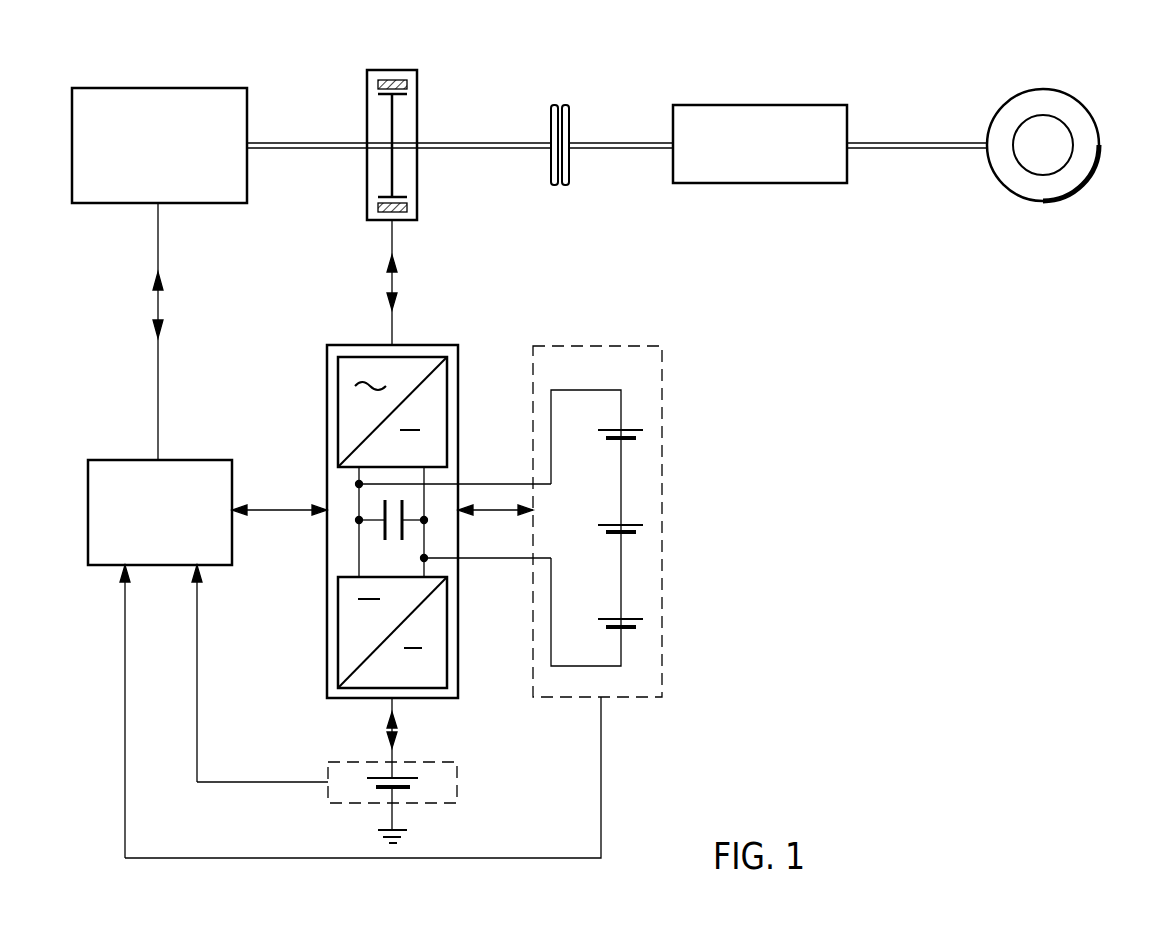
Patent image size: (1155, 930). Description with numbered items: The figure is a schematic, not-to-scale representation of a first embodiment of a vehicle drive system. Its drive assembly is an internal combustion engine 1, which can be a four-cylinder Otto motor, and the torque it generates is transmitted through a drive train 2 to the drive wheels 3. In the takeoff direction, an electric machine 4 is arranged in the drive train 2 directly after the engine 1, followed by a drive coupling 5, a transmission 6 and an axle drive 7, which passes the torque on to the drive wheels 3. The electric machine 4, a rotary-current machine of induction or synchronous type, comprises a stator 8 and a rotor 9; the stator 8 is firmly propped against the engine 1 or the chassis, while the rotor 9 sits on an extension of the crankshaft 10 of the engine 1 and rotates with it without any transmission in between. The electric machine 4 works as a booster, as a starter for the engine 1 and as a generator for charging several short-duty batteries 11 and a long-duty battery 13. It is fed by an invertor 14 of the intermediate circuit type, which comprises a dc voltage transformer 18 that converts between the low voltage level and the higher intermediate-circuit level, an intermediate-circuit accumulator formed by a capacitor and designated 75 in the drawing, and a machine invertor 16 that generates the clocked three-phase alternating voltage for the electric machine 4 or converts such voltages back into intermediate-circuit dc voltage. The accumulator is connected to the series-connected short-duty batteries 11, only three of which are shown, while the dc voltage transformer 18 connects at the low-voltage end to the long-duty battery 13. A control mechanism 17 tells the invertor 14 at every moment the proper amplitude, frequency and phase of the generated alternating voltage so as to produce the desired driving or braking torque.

The internal combustion engine 1 is at (95, 95).
The drive train 2 is at (1108, 112).
The drive wheels 3 is at (1040, 100).
The electric machine 4 is at (355, 82).
The drive coupling 5 is at (570, 175).
The transmission 6 is at (760, 113).
The axle drive 7 is at (896, 140).
The stator 8 is at (407, 86).
The rotor 9 is at (393, 172).
The crankshaft 10 is at (297, 142).
The short-duty batteries 11 is at (662, 455).
The long-duty battery 13 is at (457, 785).
The invertor 14 is at (347, 345).
The machine invertor 16 is at (418, 370).
The control mechanism 17 is at (108, 555).
The dc voltage transformer 18 is at (352, 642).
The capacitor 75 is at (385, 503).